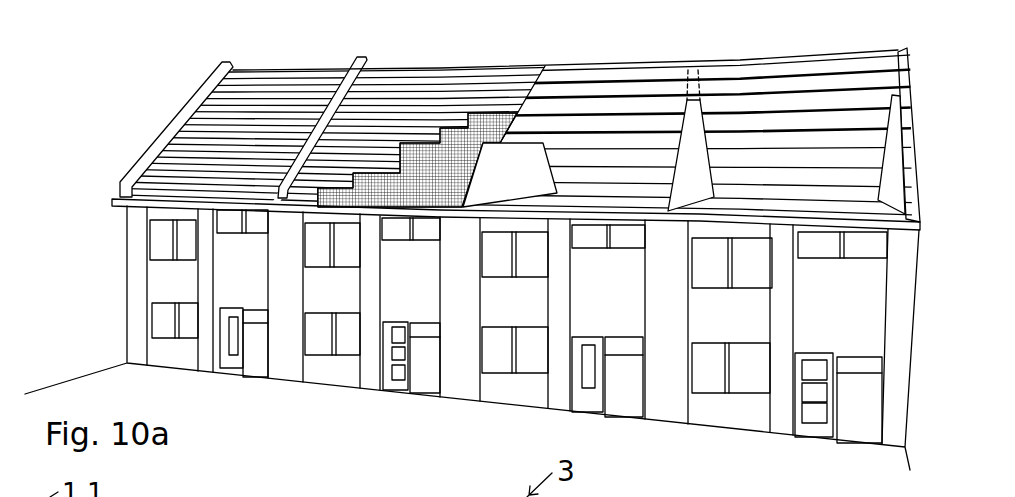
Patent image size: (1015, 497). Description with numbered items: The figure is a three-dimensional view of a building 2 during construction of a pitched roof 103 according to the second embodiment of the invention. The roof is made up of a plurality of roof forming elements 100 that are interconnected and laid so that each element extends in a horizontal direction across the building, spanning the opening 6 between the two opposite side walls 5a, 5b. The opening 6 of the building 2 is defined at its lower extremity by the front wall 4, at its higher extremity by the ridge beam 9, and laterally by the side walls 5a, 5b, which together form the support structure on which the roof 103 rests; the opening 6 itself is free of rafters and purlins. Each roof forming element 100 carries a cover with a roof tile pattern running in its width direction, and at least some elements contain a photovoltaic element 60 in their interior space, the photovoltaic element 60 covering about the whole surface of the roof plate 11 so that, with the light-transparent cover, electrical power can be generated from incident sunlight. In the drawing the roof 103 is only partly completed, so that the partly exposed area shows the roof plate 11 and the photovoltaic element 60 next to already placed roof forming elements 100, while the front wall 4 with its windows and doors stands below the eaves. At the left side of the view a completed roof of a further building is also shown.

The roof forming element 100 is at (298, 75).
The photovoltaic element 60 is at (452, 128).
The roof 103 is at (842, 38).
The roof plate 11 is at (597, 103).
The ridge beam 9 is at (713, 56).
The opening 6 is at (867, 124).
The side wall 5a is at (706, 180).
The side wall 5b is at (888, 168).
The building 2 is at (954, 103).
The front wall 4 is at (607, 300).